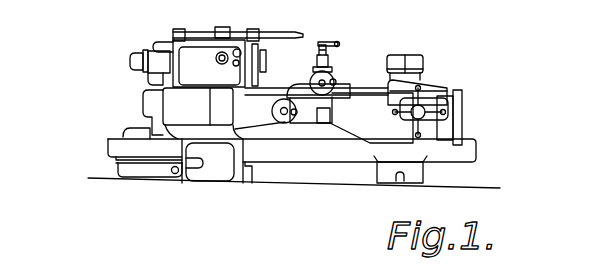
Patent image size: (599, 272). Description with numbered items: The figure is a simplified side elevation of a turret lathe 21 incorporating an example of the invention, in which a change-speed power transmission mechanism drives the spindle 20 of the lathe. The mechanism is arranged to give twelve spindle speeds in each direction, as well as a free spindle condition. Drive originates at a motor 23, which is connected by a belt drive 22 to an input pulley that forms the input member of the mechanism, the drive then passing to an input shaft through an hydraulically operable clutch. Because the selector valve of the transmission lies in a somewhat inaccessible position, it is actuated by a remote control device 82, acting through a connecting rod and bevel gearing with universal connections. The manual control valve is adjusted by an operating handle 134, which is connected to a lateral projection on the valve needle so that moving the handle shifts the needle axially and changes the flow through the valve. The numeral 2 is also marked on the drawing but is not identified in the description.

The lathe machine 2 is at (222, 108).
The spindle 20 is at (266, 57).
The turret lathe 21 is at (366, 77).
The belt drive 22 is at (157, 85).
The motor 23 is at (124, 125).
The remote control device 82 is at (218, 53).
The operating handle 134 is at (241, 51).